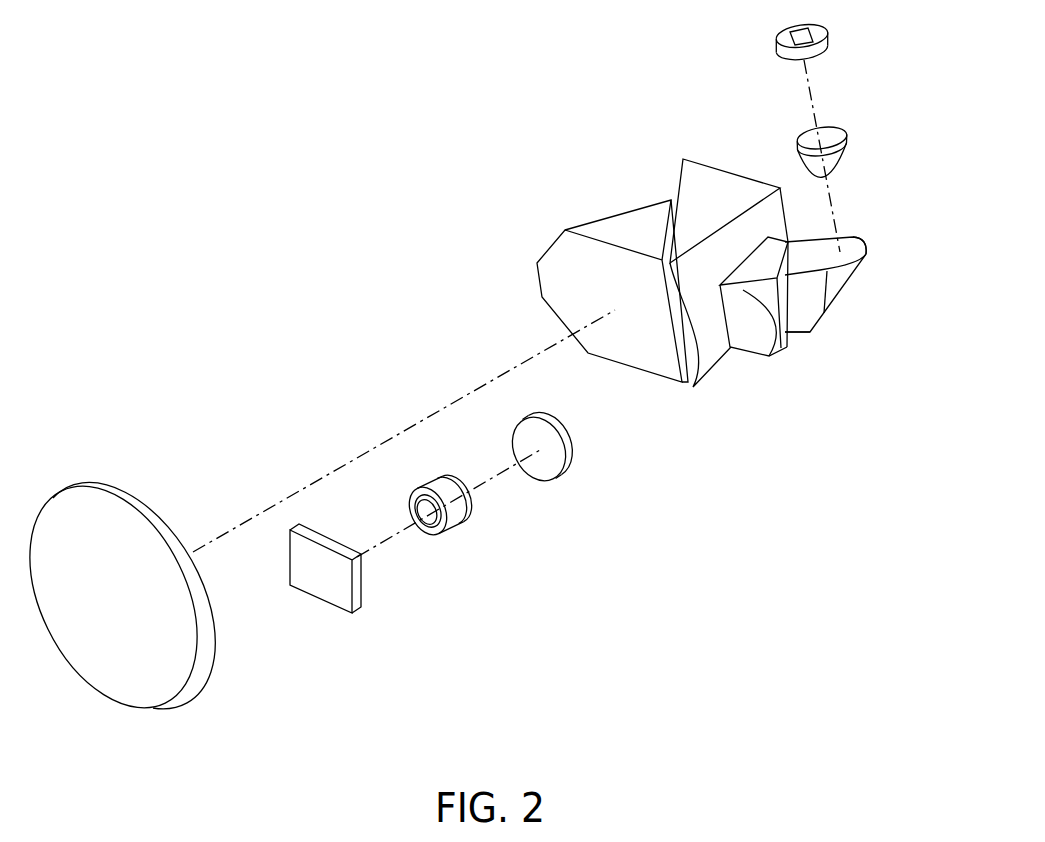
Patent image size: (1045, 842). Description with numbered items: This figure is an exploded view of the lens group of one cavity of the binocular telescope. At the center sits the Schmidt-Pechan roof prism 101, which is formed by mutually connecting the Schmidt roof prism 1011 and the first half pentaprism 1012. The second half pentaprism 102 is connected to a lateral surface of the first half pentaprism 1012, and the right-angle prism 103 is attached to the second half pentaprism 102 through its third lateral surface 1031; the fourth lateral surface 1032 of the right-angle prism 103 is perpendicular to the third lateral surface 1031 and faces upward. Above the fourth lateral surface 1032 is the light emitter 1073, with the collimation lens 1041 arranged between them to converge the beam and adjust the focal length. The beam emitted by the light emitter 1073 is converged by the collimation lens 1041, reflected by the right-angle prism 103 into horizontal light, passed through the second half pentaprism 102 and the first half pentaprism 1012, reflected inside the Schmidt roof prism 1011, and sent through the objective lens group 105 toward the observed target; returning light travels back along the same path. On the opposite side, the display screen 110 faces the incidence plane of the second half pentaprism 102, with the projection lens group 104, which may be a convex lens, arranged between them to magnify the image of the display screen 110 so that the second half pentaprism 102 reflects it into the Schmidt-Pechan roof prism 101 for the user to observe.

The Schmidt-Pechan roof prism 101 is at (645, 251).
The Schmidt roof prism 1011 is at (597, 221).
The first half pentaprism 1012 is at (734, 174).
The second half pentaprism 102 is at (743, 342).
The right-angle prism 103 is at (870, 287).
The third lateral surface 1031 is at (798, 345).
The fourth lateral surface 1032 is at (861, 233).
The collimation lens 1041 is at (838, 128).
The light emitter 1073 is at (817, 24).
The projection lens group 104 is at (455, 520).
The objective lens group 105 is at (108, 678).
The display screen 110 is at (308, 577).